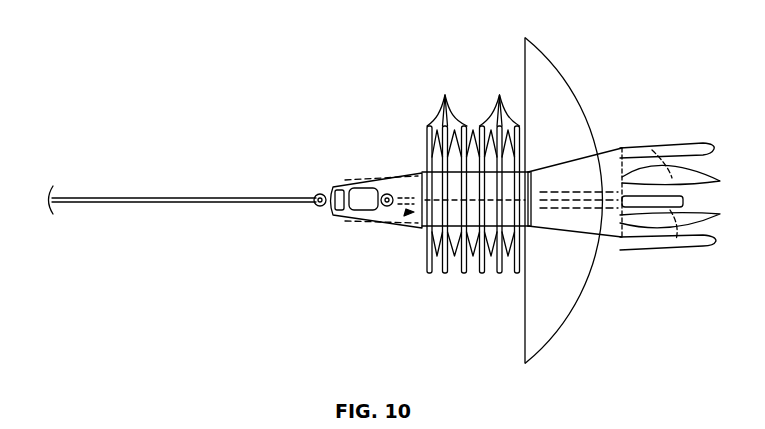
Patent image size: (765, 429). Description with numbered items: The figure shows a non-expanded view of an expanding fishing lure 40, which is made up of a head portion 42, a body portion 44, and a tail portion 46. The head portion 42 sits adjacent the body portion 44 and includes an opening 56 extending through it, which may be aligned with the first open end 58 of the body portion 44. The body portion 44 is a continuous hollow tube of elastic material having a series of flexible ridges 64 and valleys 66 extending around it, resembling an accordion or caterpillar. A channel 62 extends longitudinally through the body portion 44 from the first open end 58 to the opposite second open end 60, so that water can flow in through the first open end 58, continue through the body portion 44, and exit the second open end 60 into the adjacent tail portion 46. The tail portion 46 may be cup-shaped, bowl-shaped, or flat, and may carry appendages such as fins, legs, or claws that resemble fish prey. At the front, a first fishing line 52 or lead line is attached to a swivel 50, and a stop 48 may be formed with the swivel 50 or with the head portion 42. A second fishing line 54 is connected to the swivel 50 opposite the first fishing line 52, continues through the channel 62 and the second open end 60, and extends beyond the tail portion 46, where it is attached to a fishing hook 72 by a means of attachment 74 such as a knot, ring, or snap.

The expanding fishing lure 40 is at (405, 52).
The head portion 42 is at (377, 176).
The body portion 44 is at (446, 201).
The tail portion 46 is at (583, 200).
The stop 48 is at (335, 216).
The swivel 50 is at (338, 183).
The first fishing line 52 is at (188, 196).
The second fishing line 54 is at (471, 125).
The opening 56 is at (318, 206).
The first open end 58 is at (398, 220).
The second open end 60 is at (549, 172).
The channel 62 is at (388, 173).
The flexible ridges 64 is at (445, 95).
The valleys 66 is at (447, 232).
The fishing hook 72 is at (642, 143).
The means of attachment 74 is at (563, 95).